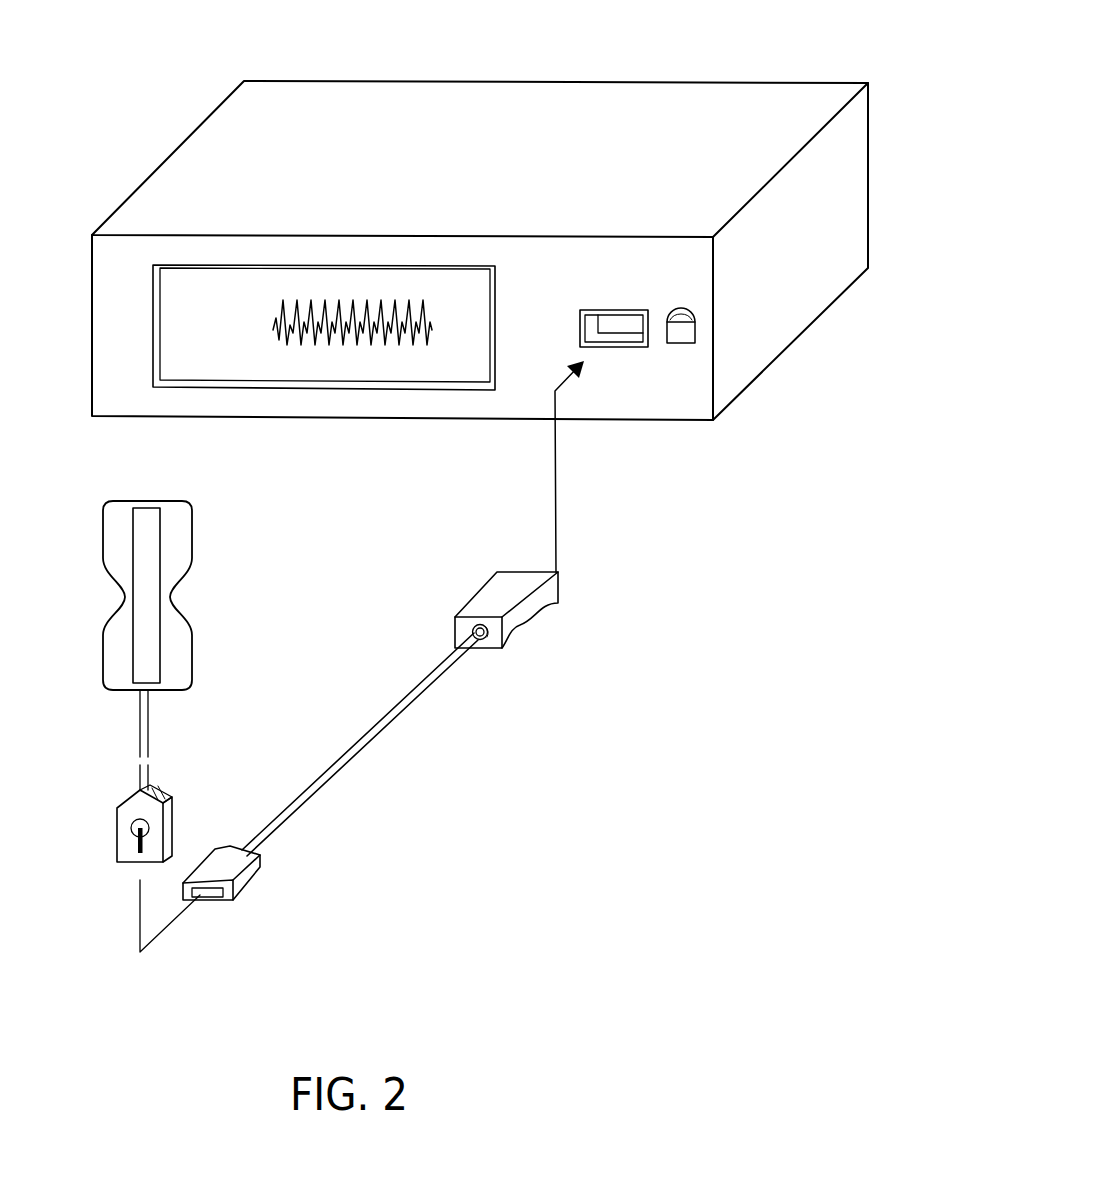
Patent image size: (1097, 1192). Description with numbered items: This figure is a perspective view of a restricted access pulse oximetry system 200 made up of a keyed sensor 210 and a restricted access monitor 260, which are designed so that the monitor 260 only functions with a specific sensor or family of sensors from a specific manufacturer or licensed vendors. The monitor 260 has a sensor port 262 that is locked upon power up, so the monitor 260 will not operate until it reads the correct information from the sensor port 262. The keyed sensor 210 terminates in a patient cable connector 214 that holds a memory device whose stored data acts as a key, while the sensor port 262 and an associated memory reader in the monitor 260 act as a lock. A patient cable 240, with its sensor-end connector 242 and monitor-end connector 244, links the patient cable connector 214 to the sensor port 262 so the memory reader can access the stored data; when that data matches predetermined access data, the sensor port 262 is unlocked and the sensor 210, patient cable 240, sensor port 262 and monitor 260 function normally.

The restricted access pulse oximetry system 200 is at (443, 71).
The restricted access monitor 260 is at (787, 82).
The sensor port 262 is at (612, 310).
The keyed sensor 210 is at (133, 500).
The patient cable connector 214 is at (157, 795).
The patient cable 240 is at (365, 747).
The cable sensor connector 242 is at (238, 885).
The cable monitor connector 244 is at (537, 611).